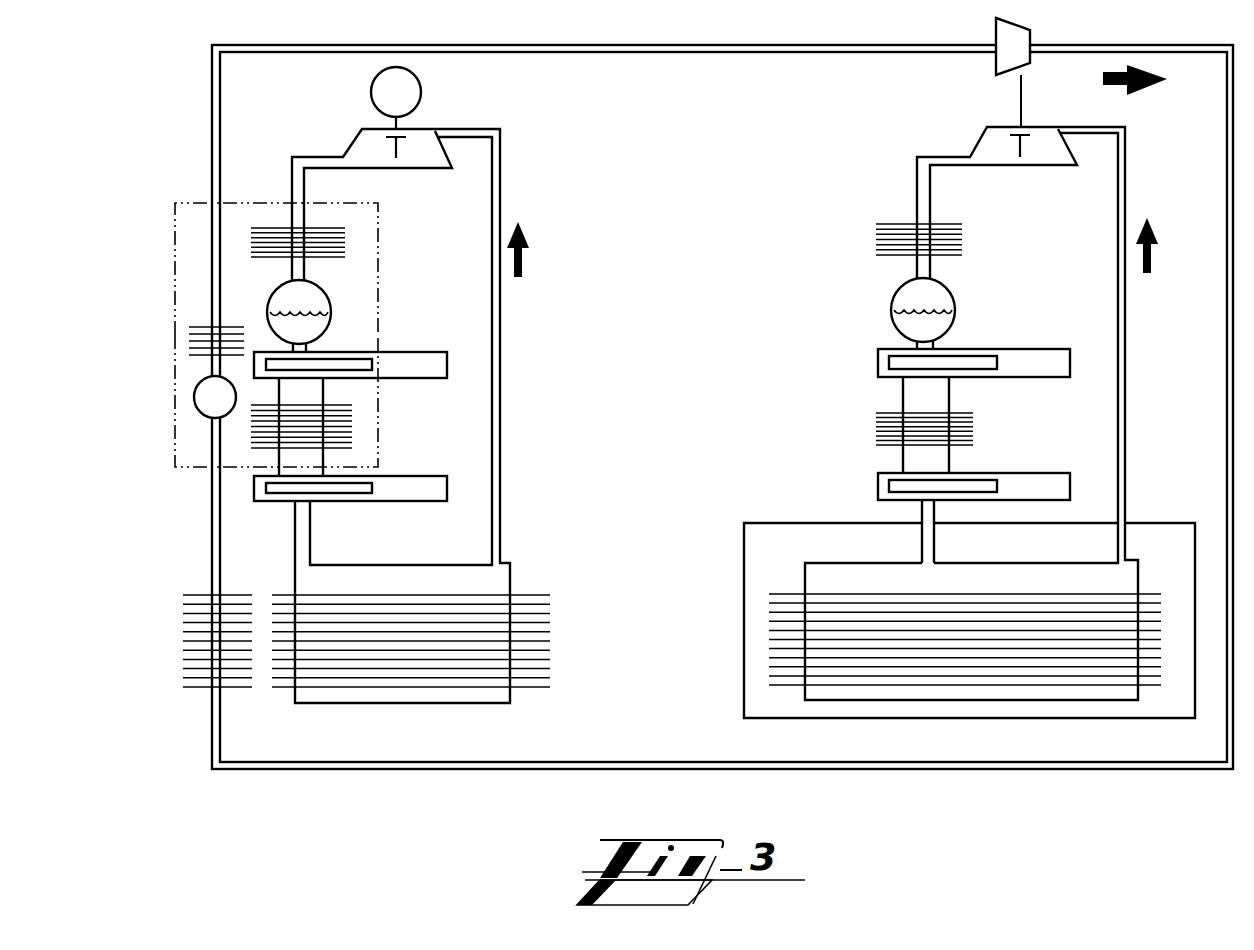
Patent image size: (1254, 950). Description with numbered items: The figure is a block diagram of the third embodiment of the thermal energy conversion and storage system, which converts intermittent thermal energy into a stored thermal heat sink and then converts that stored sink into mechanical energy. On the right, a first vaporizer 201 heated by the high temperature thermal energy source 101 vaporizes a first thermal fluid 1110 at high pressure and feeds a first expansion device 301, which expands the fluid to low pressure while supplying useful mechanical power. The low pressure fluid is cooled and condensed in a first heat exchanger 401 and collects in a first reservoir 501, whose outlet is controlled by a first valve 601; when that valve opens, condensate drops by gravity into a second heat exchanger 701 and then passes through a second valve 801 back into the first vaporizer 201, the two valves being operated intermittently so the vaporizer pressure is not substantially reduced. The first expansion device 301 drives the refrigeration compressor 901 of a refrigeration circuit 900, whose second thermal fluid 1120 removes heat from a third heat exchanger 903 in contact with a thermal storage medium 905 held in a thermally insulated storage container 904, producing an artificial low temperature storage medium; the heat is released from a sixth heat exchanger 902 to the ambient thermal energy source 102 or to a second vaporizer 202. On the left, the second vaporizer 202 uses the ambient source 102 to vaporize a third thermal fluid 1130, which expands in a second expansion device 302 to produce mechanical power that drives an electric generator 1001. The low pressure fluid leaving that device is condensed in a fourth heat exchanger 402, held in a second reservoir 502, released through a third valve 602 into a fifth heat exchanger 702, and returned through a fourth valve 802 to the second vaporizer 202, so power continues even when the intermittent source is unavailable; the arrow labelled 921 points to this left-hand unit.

The refrigeration circuit 900 is at (723, 45).
The second thermal fluid 1120 is at (647, 52).
The generator unit 921 is at (136, 141).
The thermally insulated storage container 904 is at (175, 252).
The thermal storage medium 905 is at (175, 431).
The third heat exchanger 903 is at (189, 337).
The second expansion device 302 is at (347, 148).
The electric generator 1001 is at (422, 97).
The fourth heat exchanger 402 is at (345, 238).
The second reservoir 502 is at (323, 300).
The third thermal fluid 1130 is at (312, 330).
The third valve 602 is at (356, 370).
The fifth heat exchanger 702 is at (352, 437).
The fourth valve 802 is at (342, 495).
The second vaporizer 202 is at (550, 637).
The sixth heat exchanger 902 is at (195, 689).
The ambient thermal energy source 102 is at (655, 417).
The refrigeration compressor 901 is at (1023, 68).
The first expansion device 301 is at (975, 148).
The first heat exchanger 401 is at (876, 237).
The first reservoir 501 is at (952, 290).
The first thermal fluid 1110 is at (900, 325).
The first valve 601 is at (988, 370).
The second heat exchanger 701 is at (883, 447).
The second valve 801 is at (982, 480).
The high temperature thermal energy source 101 is at (743, 627).
The first vaporizer 201 is at (779, 594).